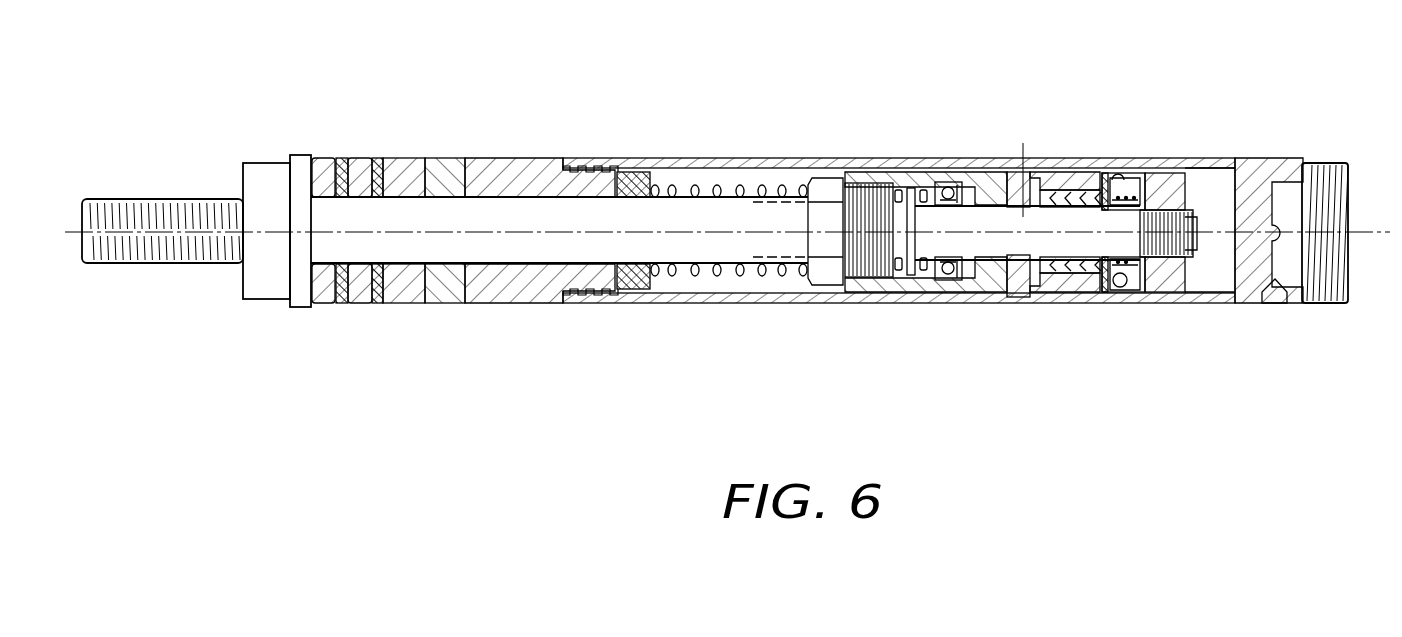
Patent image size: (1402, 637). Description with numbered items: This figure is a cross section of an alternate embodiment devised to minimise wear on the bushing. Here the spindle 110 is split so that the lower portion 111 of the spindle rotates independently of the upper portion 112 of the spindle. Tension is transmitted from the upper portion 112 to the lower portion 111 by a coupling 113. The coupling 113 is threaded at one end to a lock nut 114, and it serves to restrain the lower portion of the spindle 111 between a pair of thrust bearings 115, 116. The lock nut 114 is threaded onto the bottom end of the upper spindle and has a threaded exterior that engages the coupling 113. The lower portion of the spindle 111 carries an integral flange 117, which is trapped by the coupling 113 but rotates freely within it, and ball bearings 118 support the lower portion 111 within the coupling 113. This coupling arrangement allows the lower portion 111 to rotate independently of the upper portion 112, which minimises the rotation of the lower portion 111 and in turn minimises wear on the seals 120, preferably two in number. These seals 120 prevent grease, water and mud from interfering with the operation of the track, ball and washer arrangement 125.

The spindle 110 is at (510, 230).
The lower portion of the spindle 111 is at (985, 215).
The upper portion of the spindle 112 is at (707, 215).
The coupling 113 is at (892, 284).
The lock nut 114 is at (823, 184).
The thrust bearing 115 is at (898, 189).
The thrust bearing 116 is at (924, 189).
The integral flange 117 is at (911, 286).
The ball bearings 118 is at (946, 184).
The seals 120 is at (1073, 186).
The track, ball and washer arrangement 125 is at (1133, 172).